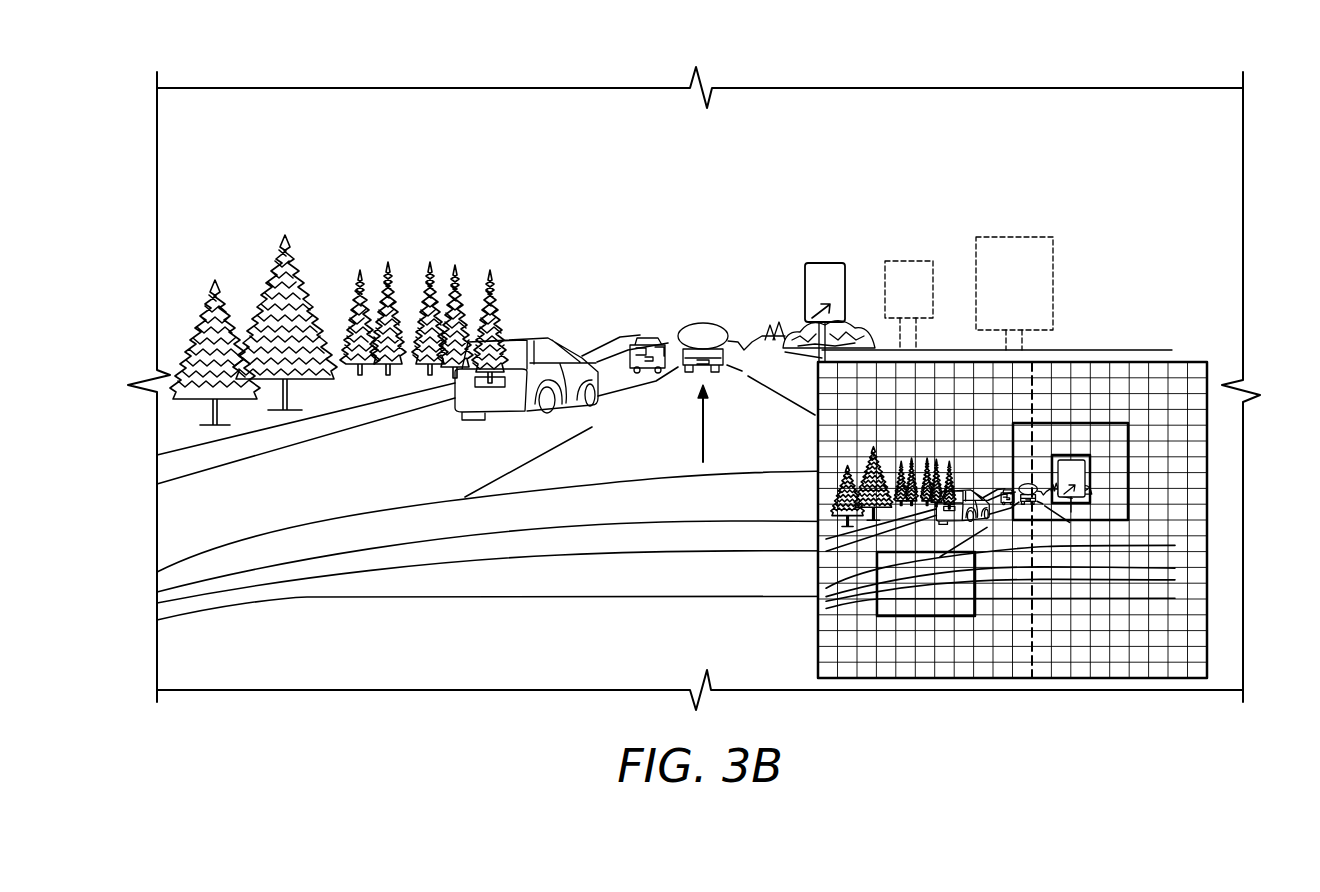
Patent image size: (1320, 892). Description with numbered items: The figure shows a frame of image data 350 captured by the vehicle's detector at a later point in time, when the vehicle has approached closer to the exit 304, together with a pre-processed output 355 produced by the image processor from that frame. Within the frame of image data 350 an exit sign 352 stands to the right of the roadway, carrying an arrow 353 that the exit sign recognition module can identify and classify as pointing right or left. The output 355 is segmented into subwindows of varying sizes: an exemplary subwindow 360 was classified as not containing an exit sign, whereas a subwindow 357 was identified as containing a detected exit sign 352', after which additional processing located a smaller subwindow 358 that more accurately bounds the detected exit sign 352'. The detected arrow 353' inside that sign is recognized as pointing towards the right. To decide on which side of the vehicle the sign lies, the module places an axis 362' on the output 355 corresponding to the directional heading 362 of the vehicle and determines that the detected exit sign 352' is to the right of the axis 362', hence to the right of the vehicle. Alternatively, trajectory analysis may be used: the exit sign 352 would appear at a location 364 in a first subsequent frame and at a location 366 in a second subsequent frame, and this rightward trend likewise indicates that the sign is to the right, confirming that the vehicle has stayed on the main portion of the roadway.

The frame of image data 350 is at (157, 193).
The exit sign 352 is at (834, 265).
The arrow 353 is at (797, 240).
The location 364 is at (915, 260).
The location 366 is at (1016, 237).
The exit 304 is at (962, 238).
The directional heading 362 is at (651, 430).
The pre-processed output 355 is at (1208, 480).
The axis 362' is at (1055, 548).
The subwindow 357 is at (1082, 423).
The subwindow 358 is at (1087, 453).
The detected exit sign 352' is at (1182, 484).
The detected arrow 353' is at (1185, 522).
The subwindow 360 is at (890, 617).